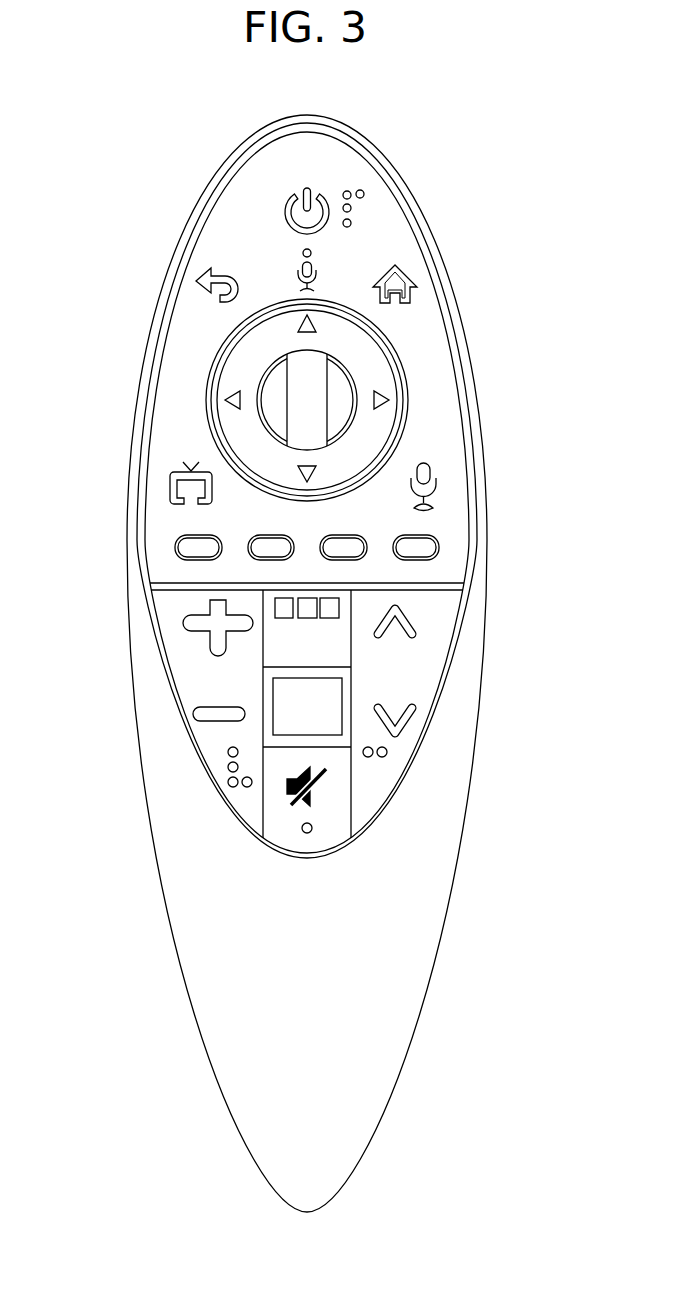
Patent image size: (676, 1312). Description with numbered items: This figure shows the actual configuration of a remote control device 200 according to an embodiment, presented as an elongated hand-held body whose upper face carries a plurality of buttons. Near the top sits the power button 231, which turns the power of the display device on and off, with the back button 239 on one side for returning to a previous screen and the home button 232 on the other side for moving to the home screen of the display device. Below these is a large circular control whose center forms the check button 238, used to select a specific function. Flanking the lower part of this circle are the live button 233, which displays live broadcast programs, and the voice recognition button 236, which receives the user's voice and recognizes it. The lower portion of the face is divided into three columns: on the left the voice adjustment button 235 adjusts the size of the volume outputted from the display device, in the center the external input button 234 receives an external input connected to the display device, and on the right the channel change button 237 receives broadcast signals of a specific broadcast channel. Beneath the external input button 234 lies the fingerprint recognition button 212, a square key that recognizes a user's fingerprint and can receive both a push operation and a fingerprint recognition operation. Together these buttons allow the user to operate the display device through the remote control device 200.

The remote control device 200 is at (76, 158).
The power button 231 is at (322, 197).
The home button 232 is at (412, 281).
The back button 239 is at (200, 285).
The check button 238 is at (267, 375).
The live button 233 is at (168, 490).
The voice recognition button 236 is at (438, 486).
The external input button 234 is at (315, 597).
The voice adjustment button 235 is at (168, 687).
The channel change button 237 is at (430, 658).
The fingerprint recognition button 212 is at (322, 735).